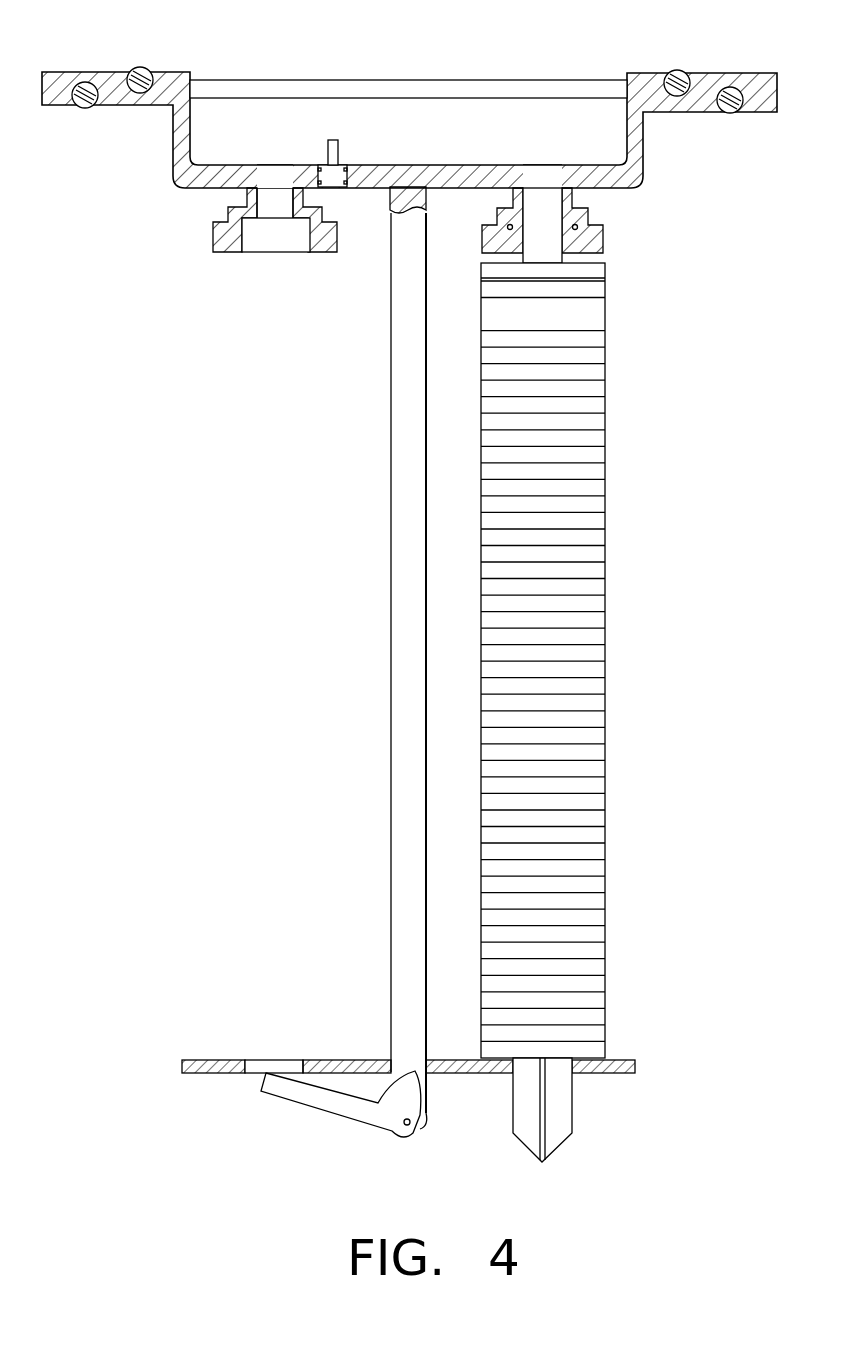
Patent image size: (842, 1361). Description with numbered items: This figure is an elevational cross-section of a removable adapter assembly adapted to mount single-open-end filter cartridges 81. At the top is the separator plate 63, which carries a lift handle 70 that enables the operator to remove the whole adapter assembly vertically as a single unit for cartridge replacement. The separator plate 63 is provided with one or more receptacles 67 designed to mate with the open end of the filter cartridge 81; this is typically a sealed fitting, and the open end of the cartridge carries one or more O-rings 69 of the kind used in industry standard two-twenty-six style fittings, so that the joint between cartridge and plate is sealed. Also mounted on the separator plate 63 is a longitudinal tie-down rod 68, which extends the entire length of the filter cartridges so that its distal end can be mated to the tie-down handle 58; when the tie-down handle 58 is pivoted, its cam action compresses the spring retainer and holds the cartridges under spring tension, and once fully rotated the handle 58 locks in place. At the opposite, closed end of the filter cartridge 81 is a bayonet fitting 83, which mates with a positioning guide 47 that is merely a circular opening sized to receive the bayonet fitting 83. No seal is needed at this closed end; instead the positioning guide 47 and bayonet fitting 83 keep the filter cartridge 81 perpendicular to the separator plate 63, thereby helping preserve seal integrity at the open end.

The positioning guide 47 is at (568, 1068).
The tie-down handle 58 is at (327, 1110).
The separator plate 63 is at (187, 180).
The receptacle 67 is at (217, 232).
The tie-down rod 68 is at (403, 512).
The O-rings 69 is at (583, 213).
The lift handle 70 is at (387, 87).
The single-open-end filter cartridge 81 is at (590, 313).
The bayonet fitting 83 is at (558, 1133).